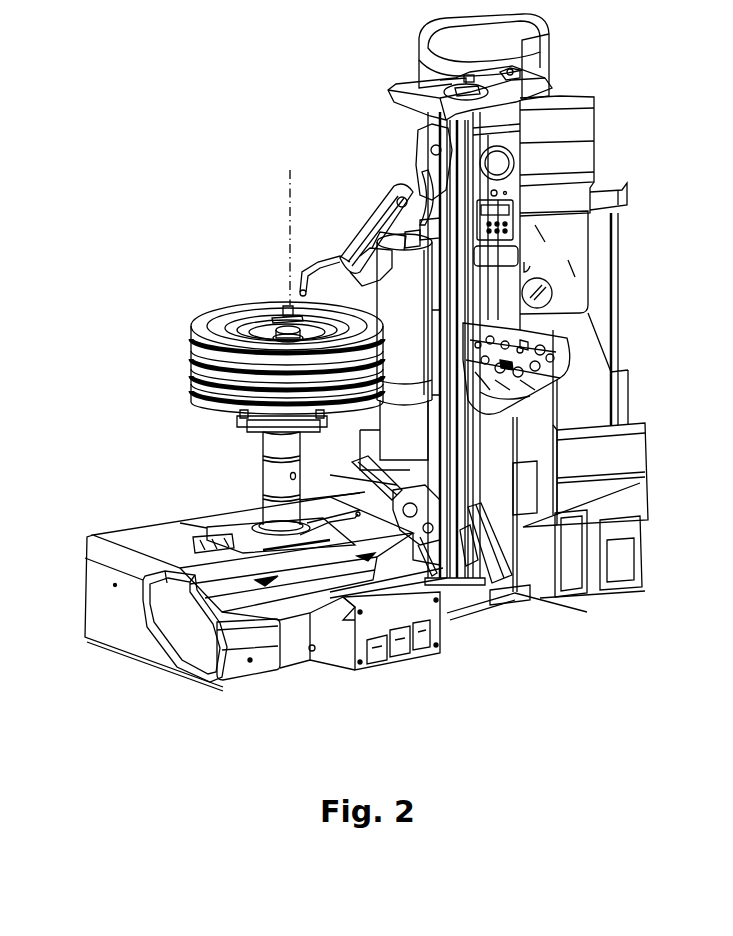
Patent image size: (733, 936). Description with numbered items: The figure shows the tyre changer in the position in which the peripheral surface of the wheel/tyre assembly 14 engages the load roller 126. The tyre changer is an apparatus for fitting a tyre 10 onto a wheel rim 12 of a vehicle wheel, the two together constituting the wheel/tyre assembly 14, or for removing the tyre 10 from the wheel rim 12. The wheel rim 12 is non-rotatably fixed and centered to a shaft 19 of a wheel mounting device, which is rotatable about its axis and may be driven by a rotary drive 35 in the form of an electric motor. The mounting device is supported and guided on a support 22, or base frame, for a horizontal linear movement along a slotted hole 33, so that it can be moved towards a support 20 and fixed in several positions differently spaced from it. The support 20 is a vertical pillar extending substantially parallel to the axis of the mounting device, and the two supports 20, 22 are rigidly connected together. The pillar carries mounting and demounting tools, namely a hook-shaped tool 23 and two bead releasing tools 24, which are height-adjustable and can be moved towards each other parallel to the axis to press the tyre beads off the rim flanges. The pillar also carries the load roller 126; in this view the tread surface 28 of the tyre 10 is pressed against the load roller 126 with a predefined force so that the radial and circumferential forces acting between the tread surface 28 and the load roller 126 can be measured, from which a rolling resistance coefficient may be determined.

The tyre 10 is at (243, 358).
The wheel rim 12 is at (232, 316).
The wheel/tyre assembly 14 is at (82, 270).
The shaft 19 is at (258, 420).
The support 20 is at (546, 48).
The support 22 is at (90, 572).
The hook-shaped tool 23 is at (308, 280).
The bead releasing tools 24 is at (430, 218).
The tread surface 28 is at (193, 378).
The slotted hole 33 is at (205, 530).
The rotary drive 35 is at (392, 238).
The load roller 126 is at (404, 319).